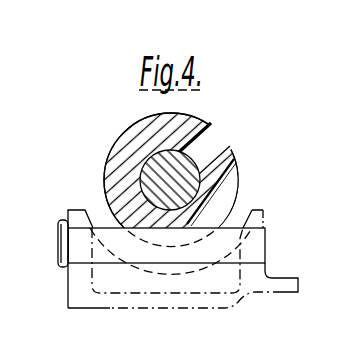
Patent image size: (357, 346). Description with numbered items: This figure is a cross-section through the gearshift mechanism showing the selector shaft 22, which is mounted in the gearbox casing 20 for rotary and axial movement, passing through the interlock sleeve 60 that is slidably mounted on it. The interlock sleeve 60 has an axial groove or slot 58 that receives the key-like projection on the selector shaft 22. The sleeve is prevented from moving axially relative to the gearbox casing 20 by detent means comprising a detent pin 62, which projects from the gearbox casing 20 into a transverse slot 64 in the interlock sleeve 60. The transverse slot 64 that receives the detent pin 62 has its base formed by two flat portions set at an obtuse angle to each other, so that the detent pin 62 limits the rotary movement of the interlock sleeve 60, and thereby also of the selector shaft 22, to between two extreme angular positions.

The interlock sleeve 60 is at (135, 137).
The selector shaft 22 is at (152, 175).
The axial groove or slot 58 is at (213, 143).
The transverse slot 64 is at (228, 193).
The detent pin 62 is at (100, 255).
The gearbox casing 20 is at (252, 281).